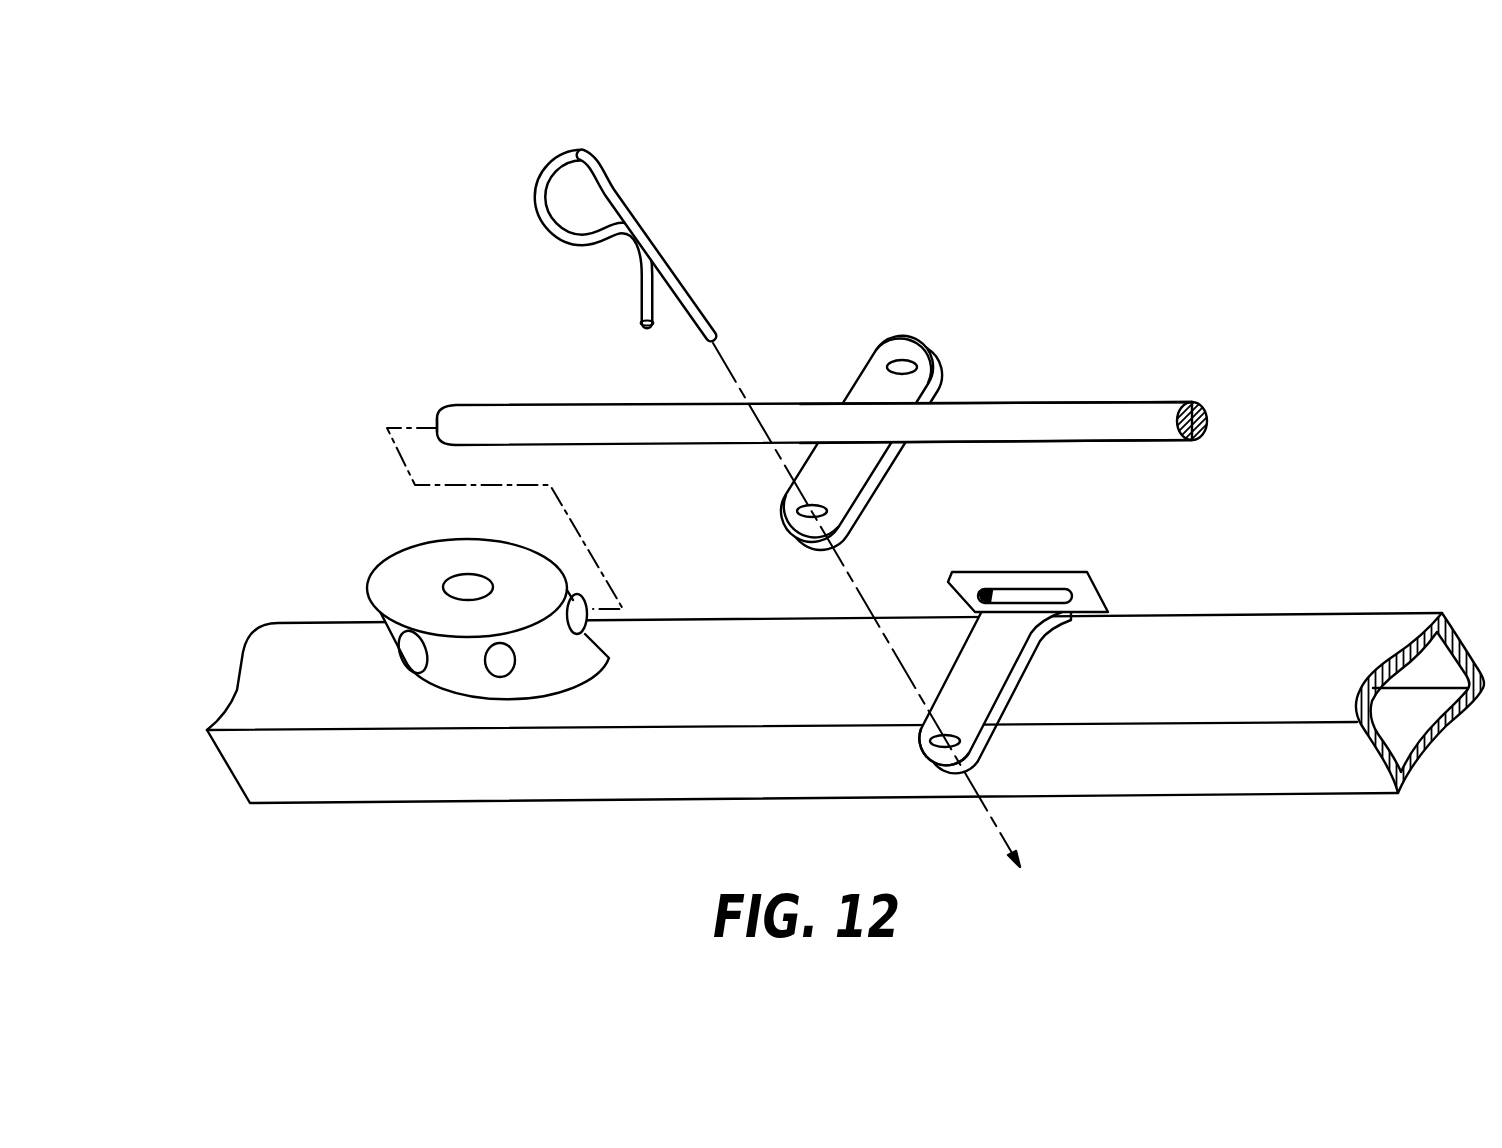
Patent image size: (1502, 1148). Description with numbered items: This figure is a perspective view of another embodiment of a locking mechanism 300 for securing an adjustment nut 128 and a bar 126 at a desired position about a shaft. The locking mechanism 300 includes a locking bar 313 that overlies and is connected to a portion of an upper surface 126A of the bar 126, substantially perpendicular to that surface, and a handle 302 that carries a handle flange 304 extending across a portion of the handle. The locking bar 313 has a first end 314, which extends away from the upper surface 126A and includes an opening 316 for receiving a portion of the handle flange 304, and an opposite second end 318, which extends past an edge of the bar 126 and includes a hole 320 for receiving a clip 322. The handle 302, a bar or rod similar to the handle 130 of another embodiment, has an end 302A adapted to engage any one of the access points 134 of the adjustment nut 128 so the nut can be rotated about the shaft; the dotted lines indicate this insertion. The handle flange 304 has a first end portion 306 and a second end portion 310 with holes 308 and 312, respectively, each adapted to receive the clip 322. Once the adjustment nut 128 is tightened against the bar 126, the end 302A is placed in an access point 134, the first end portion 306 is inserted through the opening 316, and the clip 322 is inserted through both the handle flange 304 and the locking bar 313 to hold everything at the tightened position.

The bar 126 is at (818, 687).
The upper surface 126A is at (1318, 643).
The adjustment nut 128 is at (481, 611).
The handle 130 is at (1090, 413).
The access points 134 is at (577, 610).
The locking mechanism 300 is at (973, 240).
The handle 302 is at (810, 394).
The end 302A is at (1200, 416).
The handle flange 304 is at (847, 420).
The first end portion 306 is at (893, 352).
The hole 308 is at (903, 365).
The second end portion 310 is at (850, 518).
The hole 312 is at (798, 510).
The locking bar 313 is at (995, 673).
The first end 314 is at (1032, 587).
The opening 316 is at (975, 601).
The second end 318 is at (983, 750).
The hole 320 is at (918, 740).
The clip 322 is at (535, 203).